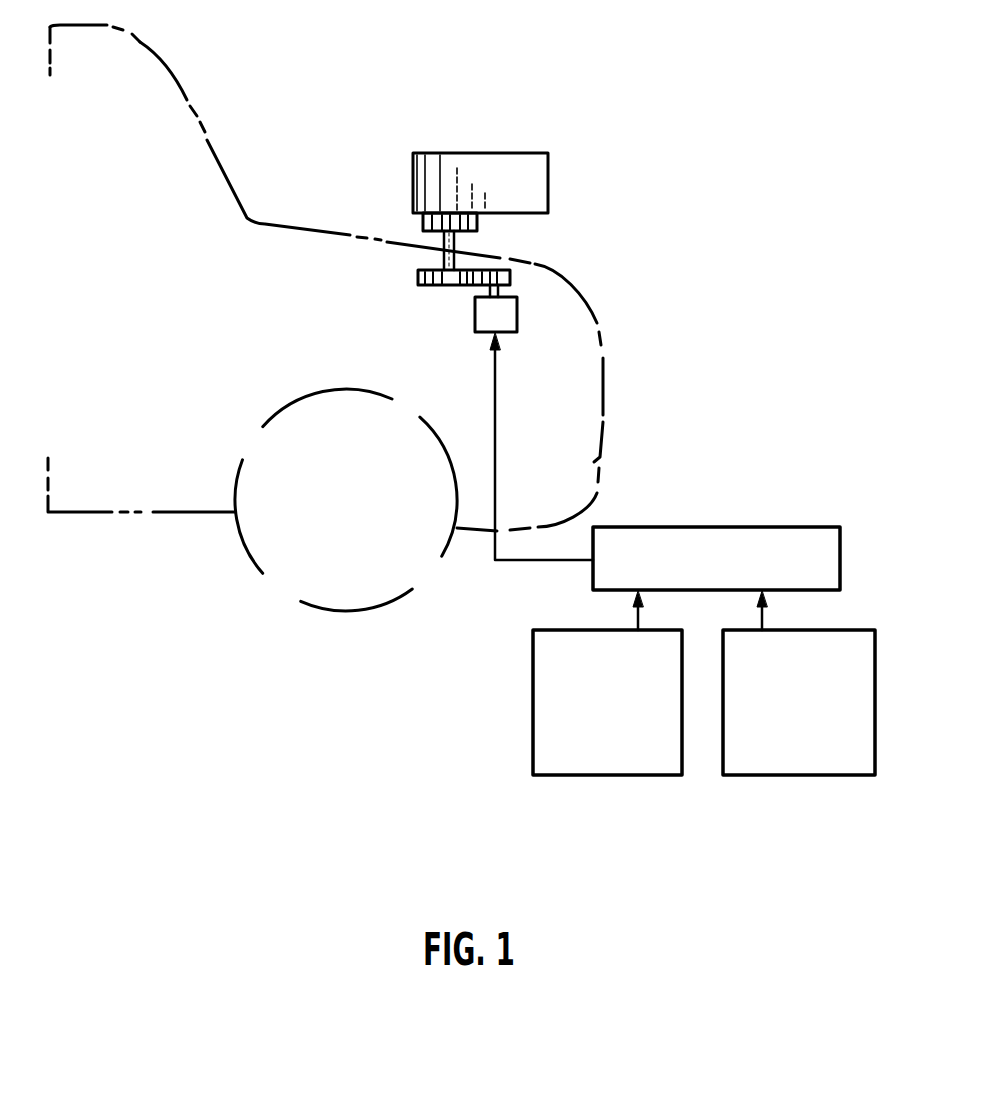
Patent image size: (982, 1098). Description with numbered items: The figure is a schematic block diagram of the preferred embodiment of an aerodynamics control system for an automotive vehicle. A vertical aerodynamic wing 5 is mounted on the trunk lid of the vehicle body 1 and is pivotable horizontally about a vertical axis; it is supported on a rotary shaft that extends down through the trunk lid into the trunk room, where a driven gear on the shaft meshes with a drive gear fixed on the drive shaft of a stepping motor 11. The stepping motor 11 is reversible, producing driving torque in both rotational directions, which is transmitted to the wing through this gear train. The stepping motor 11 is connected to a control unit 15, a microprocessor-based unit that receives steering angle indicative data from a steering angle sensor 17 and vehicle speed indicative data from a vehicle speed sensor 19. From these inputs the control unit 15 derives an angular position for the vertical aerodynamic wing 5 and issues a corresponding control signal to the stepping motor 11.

The vehicle body 1 is at (207, 143).
The vertical aerodynamic wing 5 is at (548, 188).
The stepping motor 11 is at (517, 313).
The control unit 15 is at (725, 527).
The steering angle sensor 17 is at (533, 697).
The vehicle speed sensor 19 is at (787, 775).